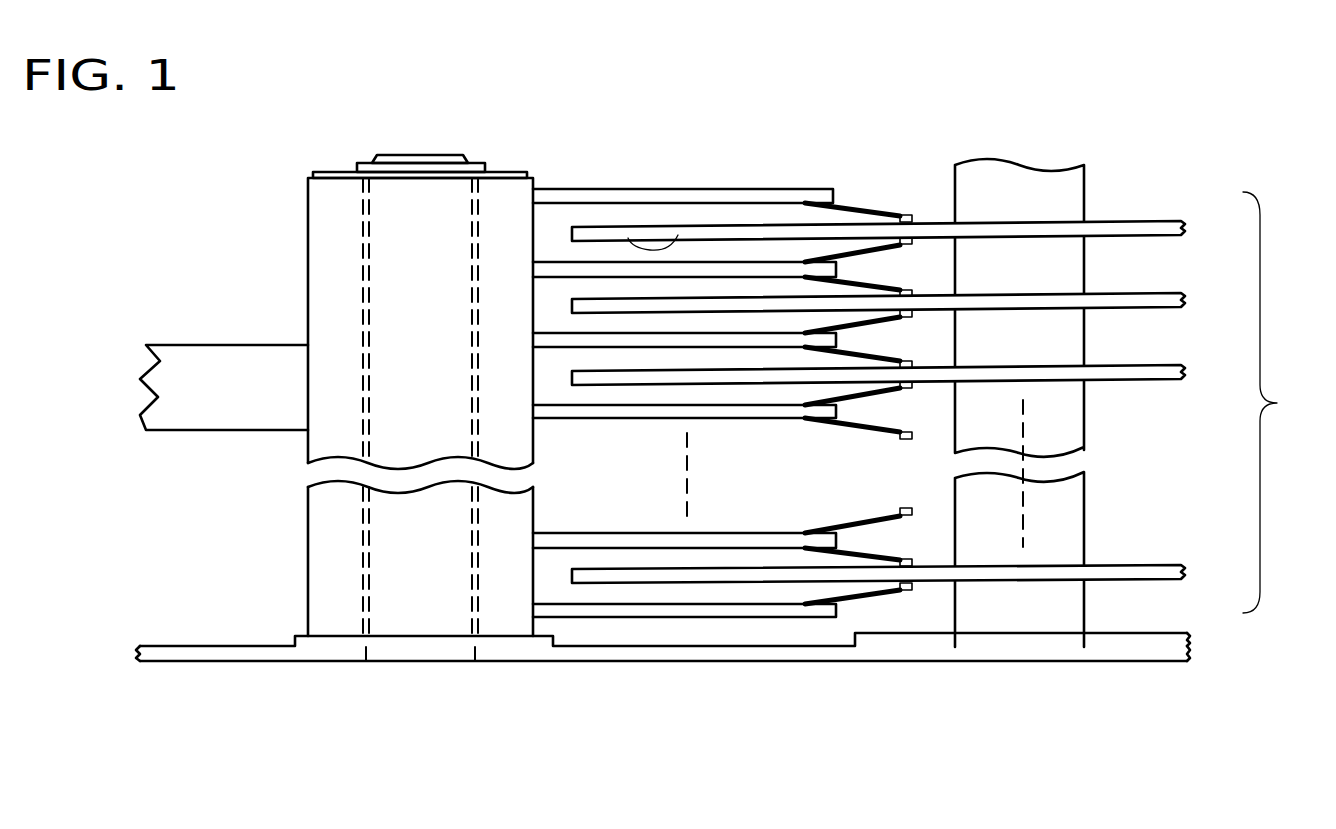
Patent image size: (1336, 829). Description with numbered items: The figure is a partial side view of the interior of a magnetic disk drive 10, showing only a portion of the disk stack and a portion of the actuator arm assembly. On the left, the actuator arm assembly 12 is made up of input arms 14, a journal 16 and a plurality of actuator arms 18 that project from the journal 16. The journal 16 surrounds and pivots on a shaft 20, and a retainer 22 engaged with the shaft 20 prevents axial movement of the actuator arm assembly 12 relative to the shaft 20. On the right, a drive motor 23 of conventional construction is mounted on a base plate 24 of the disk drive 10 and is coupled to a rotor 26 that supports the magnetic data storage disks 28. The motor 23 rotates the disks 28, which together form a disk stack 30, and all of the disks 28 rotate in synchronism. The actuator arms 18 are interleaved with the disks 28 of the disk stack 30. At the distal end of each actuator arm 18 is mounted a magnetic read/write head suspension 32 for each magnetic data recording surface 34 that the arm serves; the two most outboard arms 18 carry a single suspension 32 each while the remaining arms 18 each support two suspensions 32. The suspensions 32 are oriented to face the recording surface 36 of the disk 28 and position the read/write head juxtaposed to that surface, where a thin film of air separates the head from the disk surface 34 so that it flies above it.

The magnetic disk drive 10 is at (517, 716).
The actuator arm assembly 12 is at (493, 198).
The input arms 14 is at (208, 398).
The journal 16 is at (337, 577).
The actuator arms 18 is at (575, 272).
The shaft 20 is at (440, 198).
The retainer 22 is at (355, 160).
The drive motor 23 is at (1115, 635).
The base plate 24 is at (1165, 648).
The rotor 26 is at (1038, 603).
The magnetic data storage disks 28 is at (1127, 228).
The disk stack 30 is at (1285, 402).
The magnetic read/write head suspension 32 is at (872, 207).
The magnetic data recording surface 34 is at (908, 238).
The recording surface 36 is at (678, 235).